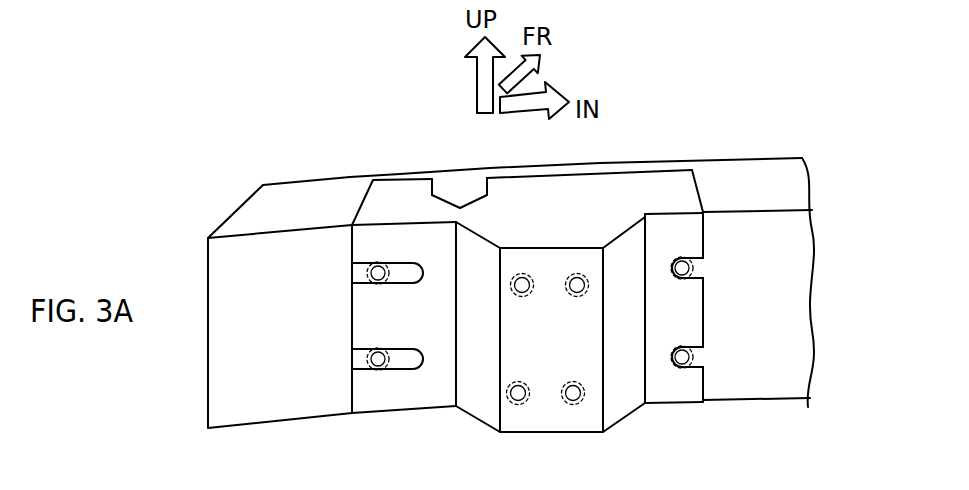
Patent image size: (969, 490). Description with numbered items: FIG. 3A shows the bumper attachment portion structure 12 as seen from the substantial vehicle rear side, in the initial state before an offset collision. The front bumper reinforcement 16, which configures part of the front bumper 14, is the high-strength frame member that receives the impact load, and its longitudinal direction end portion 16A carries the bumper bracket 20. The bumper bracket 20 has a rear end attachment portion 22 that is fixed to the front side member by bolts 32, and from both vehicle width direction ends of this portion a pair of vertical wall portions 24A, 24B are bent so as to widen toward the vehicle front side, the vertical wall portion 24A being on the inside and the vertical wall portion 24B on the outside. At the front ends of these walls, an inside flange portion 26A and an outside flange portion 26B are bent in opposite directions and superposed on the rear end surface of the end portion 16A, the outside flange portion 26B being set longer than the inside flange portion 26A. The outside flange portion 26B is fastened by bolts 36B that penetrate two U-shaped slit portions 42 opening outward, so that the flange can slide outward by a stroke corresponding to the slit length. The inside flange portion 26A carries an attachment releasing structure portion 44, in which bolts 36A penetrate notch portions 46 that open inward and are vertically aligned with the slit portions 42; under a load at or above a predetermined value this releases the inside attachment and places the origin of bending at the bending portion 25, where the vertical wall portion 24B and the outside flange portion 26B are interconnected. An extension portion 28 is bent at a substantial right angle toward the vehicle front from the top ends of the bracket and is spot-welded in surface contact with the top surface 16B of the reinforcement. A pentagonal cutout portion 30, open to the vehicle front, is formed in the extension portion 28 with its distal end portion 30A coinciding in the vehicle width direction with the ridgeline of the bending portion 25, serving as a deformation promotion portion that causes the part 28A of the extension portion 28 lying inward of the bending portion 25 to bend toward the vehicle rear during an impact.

The bumper attachment portion structure 12 is at (762, 417).
The front bumper 14 is at (793, 132).
The front bumper reinforcement 16 is at (728, 157).
The longitudinal direction end portion of front bumper reinforcement 16A is at (350, 176).
The top surface of front bumper reinforcement 16B is at (787, 162).
The bumper bracket 20 is at (558, 340).
The rear end attachment portion 22 is at (557, 418).
The vertical wall portion 24A is at (625, 388).
The vertical wall portion 24B is at (473, 405).
The bending portion 25 is at (457, 342).
The inside flange portion 26A is at (670, 397).
The outside flange portion 26B is at (405, 393).
The extension portion 28 is at (524, 194).
The part of extension portion 28A is at (614, 190).
The cutout portion 30 is at (438, 188).
The distal end portion of cutout portion 30A is at (461, 205).
The bolts 32 is at (575, 267).
The bolts 36A is at (688, 252).
The bolts 36B is at (360, 258).
The slit portions 42 is at (403, 280).
The attachment releasing structure portion 44 is at (777, 338).
The notch portions 46 is at (704, 272).